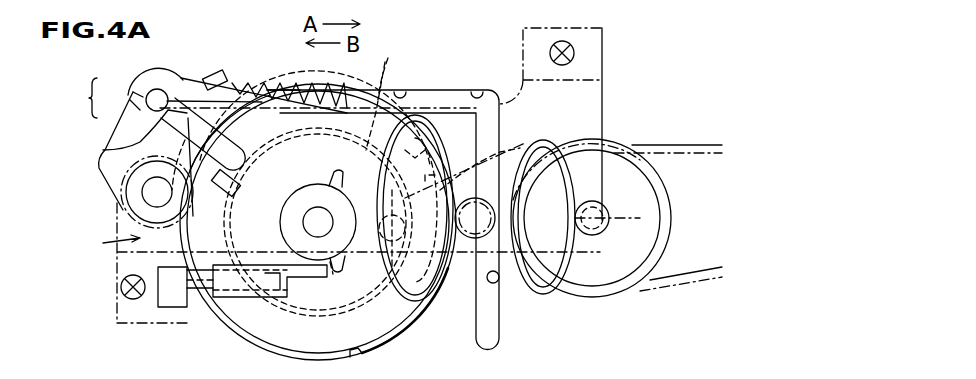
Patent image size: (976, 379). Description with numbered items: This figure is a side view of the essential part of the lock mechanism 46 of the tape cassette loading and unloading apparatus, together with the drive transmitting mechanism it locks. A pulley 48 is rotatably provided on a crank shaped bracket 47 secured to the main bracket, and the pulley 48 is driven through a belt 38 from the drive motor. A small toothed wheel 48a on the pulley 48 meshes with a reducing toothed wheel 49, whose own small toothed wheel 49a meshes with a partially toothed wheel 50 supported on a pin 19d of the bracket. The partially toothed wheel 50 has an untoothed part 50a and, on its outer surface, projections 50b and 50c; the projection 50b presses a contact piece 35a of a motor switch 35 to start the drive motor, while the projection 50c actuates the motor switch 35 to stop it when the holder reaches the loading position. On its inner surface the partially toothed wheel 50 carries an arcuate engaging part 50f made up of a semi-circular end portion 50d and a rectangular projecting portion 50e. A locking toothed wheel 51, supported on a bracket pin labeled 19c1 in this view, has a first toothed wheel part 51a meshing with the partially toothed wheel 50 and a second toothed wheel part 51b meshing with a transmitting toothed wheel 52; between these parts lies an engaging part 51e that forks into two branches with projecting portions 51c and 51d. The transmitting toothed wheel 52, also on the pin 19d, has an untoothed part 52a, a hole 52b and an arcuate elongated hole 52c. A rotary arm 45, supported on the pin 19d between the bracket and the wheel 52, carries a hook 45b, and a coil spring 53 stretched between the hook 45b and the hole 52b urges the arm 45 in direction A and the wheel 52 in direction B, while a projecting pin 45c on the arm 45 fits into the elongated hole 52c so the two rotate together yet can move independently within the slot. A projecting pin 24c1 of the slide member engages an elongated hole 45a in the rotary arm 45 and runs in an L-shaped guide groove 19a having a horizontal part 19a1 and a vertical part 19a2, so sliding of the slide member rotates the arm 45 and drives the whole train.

The guide groove 19a is at (487, 92).
The horizontal part of guide groove 19a1 is at (400, 90).
The vertical part of guide groove 19a2 is at (495, 280).
The pivot pin 19c1 is at (163, 196).
The pin 19d is at (312, 208).
The projecting pin 24c1 is at (147, 82).
The motor switch 35 is at (158, 302).
The contact piece 35a is at (308, 273).
The belt 38 is at (638, 143).
The rotary arm 45 is at (187, 80).
The elongated hole 45a is at (161, 86).
The hook 45b is at (221, 82).
The projecting pin 45c is at (343, 268).
The lock mechanism 46 is at (108, 245).
The crank shaped bracket 47 is at (604, 94).
The pulley 48 is at (668, 212).
The small toothed wheel 48a is at (606, 218).
The reducing toothed wheel 49 is at (530, 300).
The small toothed wheel 49a is at (470, 264).
The partially toothed wheel 50 is at (256, 345).
The untoothed part 50a is at (396, 336).
The projection 50b is at (336, 276).
The projection 50c is at (337, 172).
The semi-circular end portion 50d is at (402, 299).
The rectangular projecting portion 50e is at (423, 148).
The engaging part 50f is at (430, 94).
The locking toothed wheel 51 is at (104, 186).
The first toothed wheel part 51a is at (117, 211).
The second toothed wheel part 51b is at (157, 192).
The projecting portion 51c is at (140, 110).
The projecting portion 51d is at (143, 97).
The engaging part 51e is at (76, 98).
The transmitting toothed wheel 52 is at (278, 126).
The untoothed part 52a is at (347, 88).
The hole 52b is at (387, 70).
The arcuate elongated hole 52c is at (496, 153).
The coil spring 53 is at (261, 102).